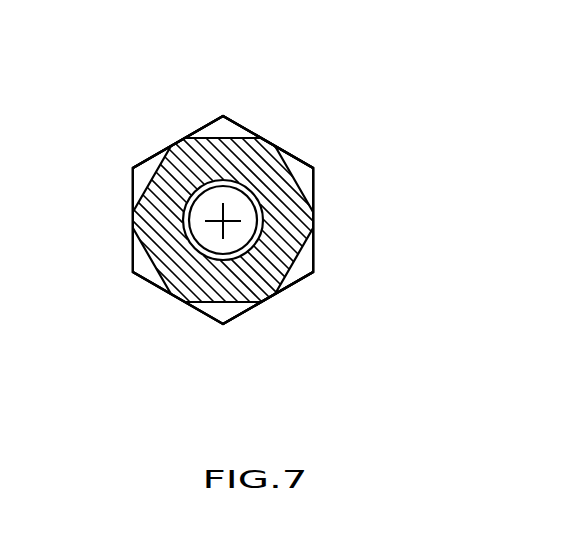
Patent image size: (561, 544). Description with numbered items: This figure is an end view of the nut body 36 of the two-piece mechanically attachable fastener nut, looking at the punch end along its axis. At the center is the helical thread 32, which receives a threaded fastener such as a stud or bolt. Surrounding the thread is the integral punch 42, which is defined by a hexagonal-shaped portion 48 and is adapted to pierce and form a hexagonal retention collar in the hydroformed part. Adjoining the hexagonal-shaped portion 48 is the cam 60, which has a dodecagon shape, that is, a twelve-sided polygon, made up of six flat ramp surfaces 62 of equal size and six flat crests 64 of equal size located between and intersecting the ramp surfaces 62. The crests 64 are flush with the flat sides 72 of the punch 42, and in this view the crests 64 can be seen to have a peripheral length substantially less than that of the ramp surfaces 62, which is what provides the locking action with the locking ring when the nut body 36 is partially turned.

The helical thread 32 is at (254, 203).
The nut body 36 is at (240, 115).
The integral punch 42 is at (318, 160).
The hexagonal-shaped portion 48 is at (315, 197).
The cam 60 is at (153, 153).
The flat ramp surfaces 62 is at (215, 143).
The flat crests 64 is at (177, 143).
The flat sides 72 is at (250, 130).